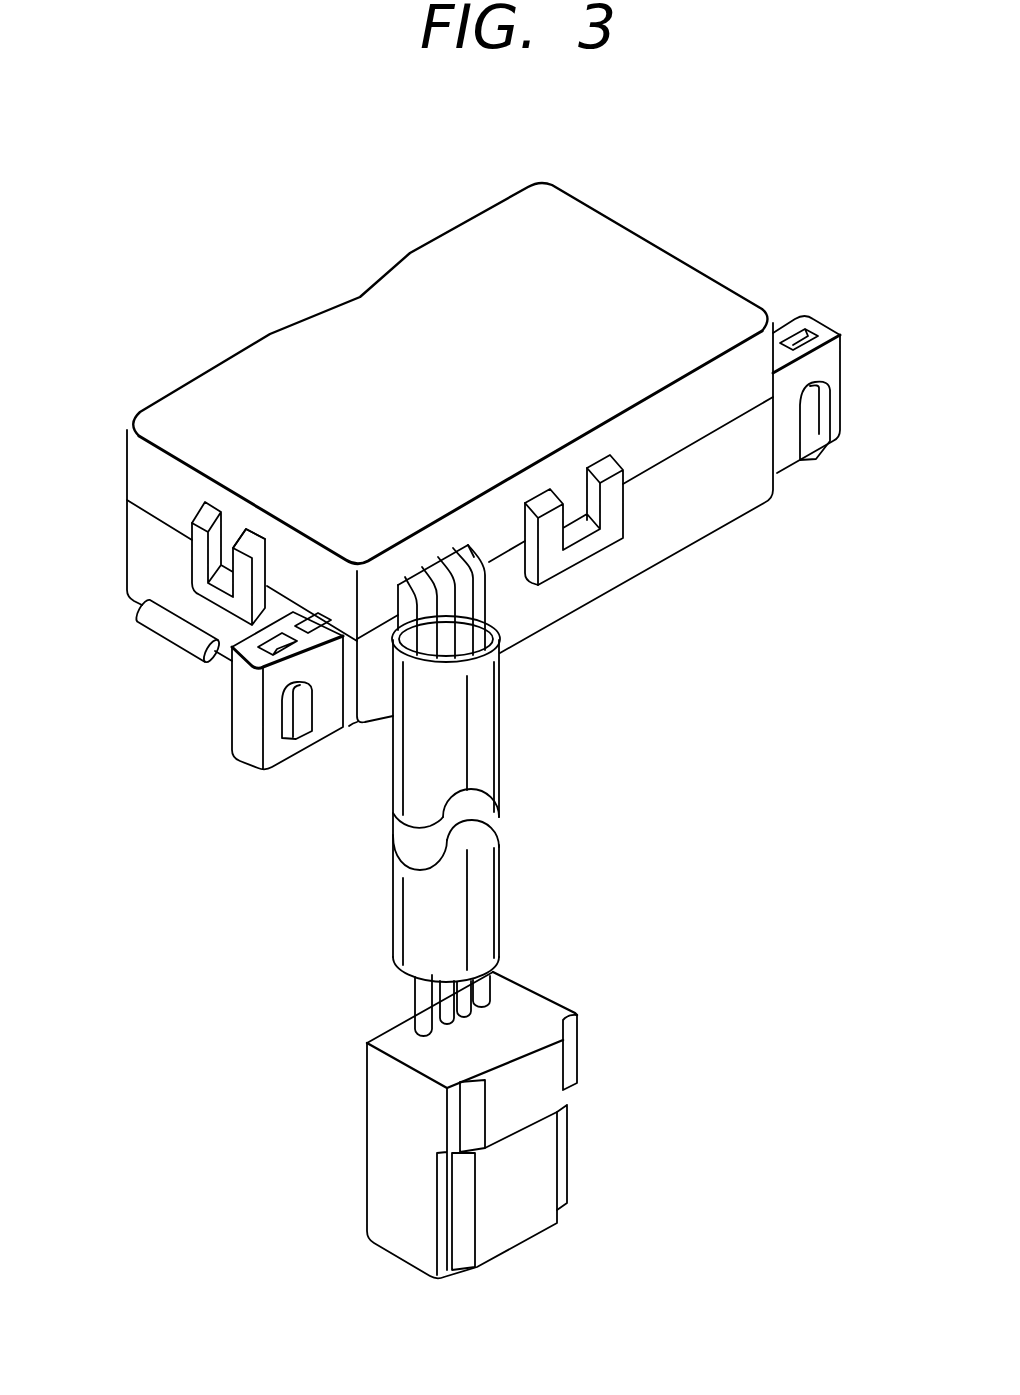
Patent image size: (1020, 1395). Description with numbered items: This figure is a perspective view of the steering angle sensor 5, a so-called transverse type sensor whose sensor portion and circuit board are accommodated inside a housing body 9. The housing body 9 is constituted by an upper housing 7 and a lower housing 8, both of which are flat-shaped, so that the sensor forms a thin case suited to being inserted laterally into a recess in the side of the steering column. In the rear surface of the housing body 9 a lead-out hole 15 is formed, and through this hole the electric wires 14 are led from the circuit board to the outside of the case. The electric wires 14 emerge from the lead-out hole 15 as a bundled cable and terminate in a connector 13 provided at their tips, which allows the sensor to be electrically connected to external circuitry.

The steering angle sensor 5 is at (506, 737).
The upper housing 7 is at (700, 410).
The lower housing 8 is at (690, 513).
The housing body 9 is at (506, 476).
The connector 13 is at (510, 1218).
The electric wires 14 is at (443, 640).
The lead-out hole 15 is at (458, 553).